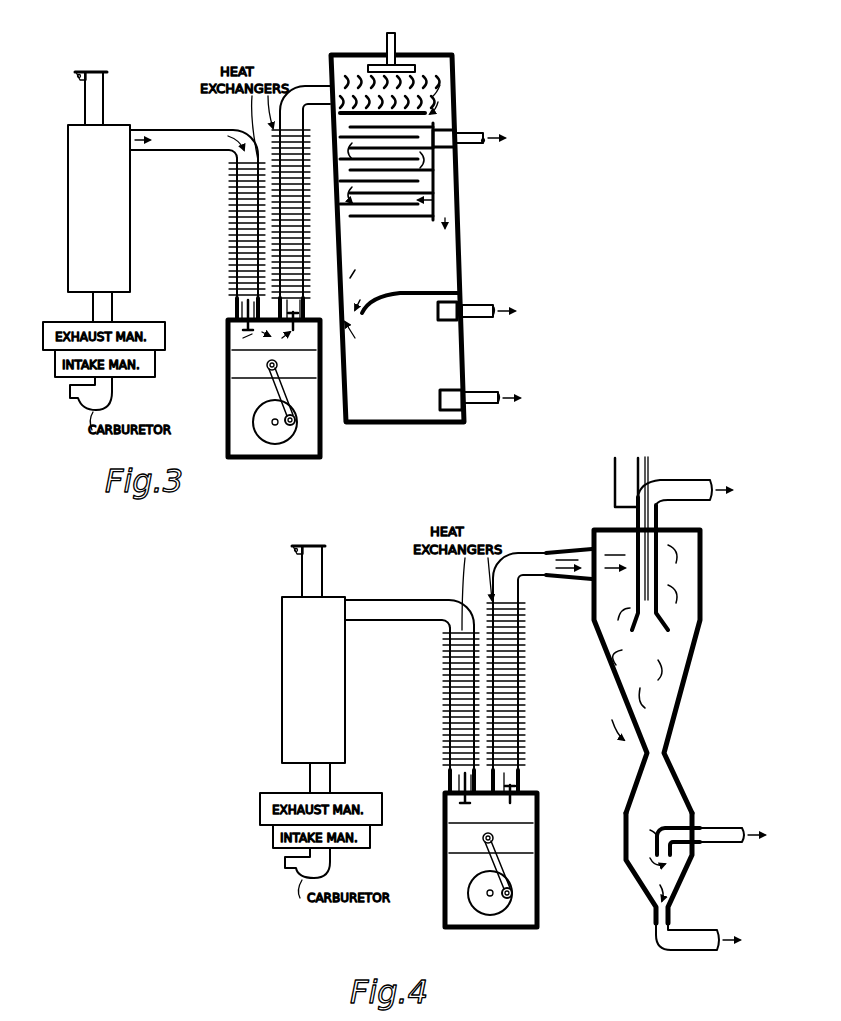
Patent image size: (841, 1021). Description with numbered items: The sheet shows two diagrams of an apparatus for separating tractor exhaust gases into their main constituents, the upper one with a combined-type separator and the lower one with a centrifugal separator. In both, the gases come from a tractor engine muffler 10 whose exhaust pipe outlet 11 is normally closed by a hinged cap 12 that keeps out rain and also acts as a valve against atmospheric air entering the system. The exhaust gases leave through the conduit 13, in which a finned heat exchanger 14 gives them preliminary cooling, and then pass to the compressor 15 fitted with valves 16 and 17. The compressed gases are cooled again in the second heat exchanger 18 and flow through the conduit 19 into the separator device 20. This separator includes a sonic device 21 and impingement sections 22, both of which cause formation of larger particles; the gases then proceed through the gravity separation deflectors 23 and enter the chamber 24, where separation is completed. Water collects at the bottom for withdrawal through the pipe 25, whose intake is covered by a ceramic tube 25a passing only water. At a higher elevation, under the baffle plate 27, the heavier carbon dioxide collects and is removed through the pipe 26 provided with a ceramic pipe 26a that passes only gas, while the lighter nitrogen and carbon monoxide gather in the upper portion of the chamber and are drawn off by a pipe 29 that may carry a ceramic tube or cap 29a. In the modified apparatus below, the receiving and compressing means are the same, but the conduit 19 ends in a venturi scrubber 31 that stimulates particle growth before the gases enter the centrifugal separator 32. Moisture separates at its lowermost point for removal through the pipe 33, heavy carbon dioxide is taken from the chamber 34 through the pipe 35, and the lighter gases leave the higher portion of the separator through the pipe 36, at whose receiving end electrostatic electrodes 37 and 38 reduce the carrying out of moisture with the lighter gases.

In FIG. 3, the tractor engine muffler 10 is at (115, 210).
In FIG. 4, the tractor engine muffler 10 is at (285, 702).
In FIG. 3, the exhaust pipe outlet 11 is at (97, 104).
In FIG. 4, the exhaust pipe outlet 11 is at (315, 573).
In FIG. 3, the hinged cap 12 is at (104, 70).
In FIG. 4, the hinged cap 12 is at (321, 543).
In FIG. 3, the conduit 13 is at (170, 132).
In FIG. 4, the conduit 13 is at (385, 602).
In FIG. 3, the heat exchanger 14 is at (232, 212).
In FIG. 4, the heat exchanger 14 is at (445, 708).
In FIG. 3, the compressor 15 is at (230, 402).
In FIG. 4, the compressor 15 is at (530, 892).
In FIG. 3, the valve 16 is at (238, 334).
In FIG. 4, the valve 16 is at (458, 806).
In FIG. 3, the valve 17 is at (298, 317).
In FIG. 4, the valve 17 is at (515, 788).
In FIG. 3, the second heat exchanger 18 is at (303, 245).
In FIG. 4, the second heat exchanger 18 is at (520, 711).
In FIG. 3, the conduit 19 is at (304, 88).
In FIG. 4, the conduit 19 is at (520, 576).
In FIG. 3, the separator device 20 is at (470, 342).
In FIG. 3, the sonic device 21 is at (387, 40).
In FIG. 3, the impingement sections 22 is at (445, 103).
In FIG. 3, the gravity separation deflectors 23 is at (437, 186).
In FIG. 3, the chamber 24 is at (452, 238).
In FIG. 3, the pipe or conduit 25 is at (480, 392).
In FIG. 3, the ceramic tube 25a is at (448, 410).
In FIG. 3, the pipe or conduit 26 is at (482, 304).
In FIG. 3, the ceramic pipe 26a is at (440, 320).
In FIG. 3, the baffle plate 27 is at (395, 296).
In FIG. 3, the pipe 29 is at (478, 132).
In FIG. 3, the ceramic tube or cap 29a is at (440, 147).
In FIG. 4, the venturi scrubber 31 is at (570, 580).
In FIG. 4, the separator 32 is at (706, 592).
In FIG. 4, the pipe 33 is at (672, 942).
In FIG. 4, the chamber 34 is at (632, 818).
In FIG. 4, the pipe 35 is at (724, 838).
In FIG. 4, the pipe 36 is at (698, 500).
In FIG. 4, the electrode 37 is at (615, 480).
In FIG. 4, the electrode 38 is at (648, 478).